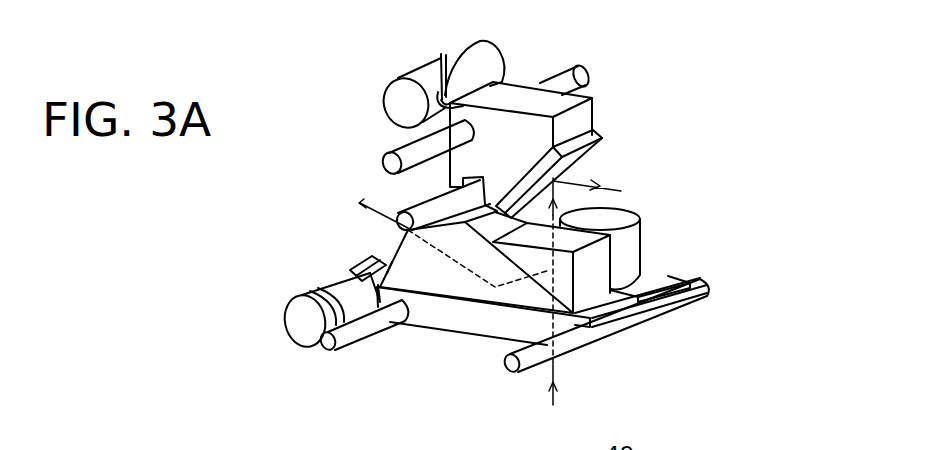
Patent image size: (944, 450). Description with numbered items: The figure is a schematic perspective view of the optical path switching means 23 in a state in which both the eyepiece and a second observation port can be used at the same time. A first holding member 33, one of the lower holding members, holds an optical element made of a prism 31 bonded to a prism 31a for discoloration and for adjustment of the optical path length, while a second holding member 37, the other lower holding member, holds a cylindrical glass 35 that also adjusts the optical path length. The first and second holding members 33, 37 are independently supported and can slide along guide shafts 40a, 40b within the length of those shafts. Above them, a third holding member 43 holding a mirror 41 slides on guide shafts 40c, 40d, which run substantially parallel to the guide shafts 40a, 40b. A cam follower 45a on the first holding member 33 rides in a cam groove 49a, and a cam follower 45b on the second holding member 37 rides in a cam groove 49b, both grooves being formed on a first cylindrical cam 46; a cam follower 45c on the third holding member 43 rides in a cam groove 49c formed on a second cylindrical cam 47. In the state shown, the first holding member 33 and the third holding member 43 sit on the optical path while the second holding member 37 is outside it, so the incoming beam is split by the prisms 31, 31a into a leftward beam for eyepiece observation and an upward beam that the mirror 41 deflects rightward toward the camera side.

The optical path switching means 23 is at (687, 92).
The prism 31 is at (413, 268).
The prism for discoloration and for adjustment of an optical path length 31a is at (597, 283).
The first holding member 33 is at (430, 312).
The cylindrical glass 35 is at (628, 212).
The second holding member 37 is at (660, 277).
The guide shaft 40a is at (327, 350).
The guide shaft 40b is at (508, 366).
The guide shaft 40c is at (574, 72).
The guide shaft 40d is at (398, 216).
The mirror 41 is at (596, 138).
The third holding member 43 is at (577, 100).
The cam follower 45a is at (377, 258).
The cam follower 45b is at (387, 273).
The cam follower 45c is at (460, 88).
The first cylindrical cam 46 is at (289, 322).
The second cylindrical cam 47 is at (392, 97).
The cam groove 49a is at (347, 277).
The cam groove 49b is at (380, 263).
The cam groove 49c is at (444, 56).